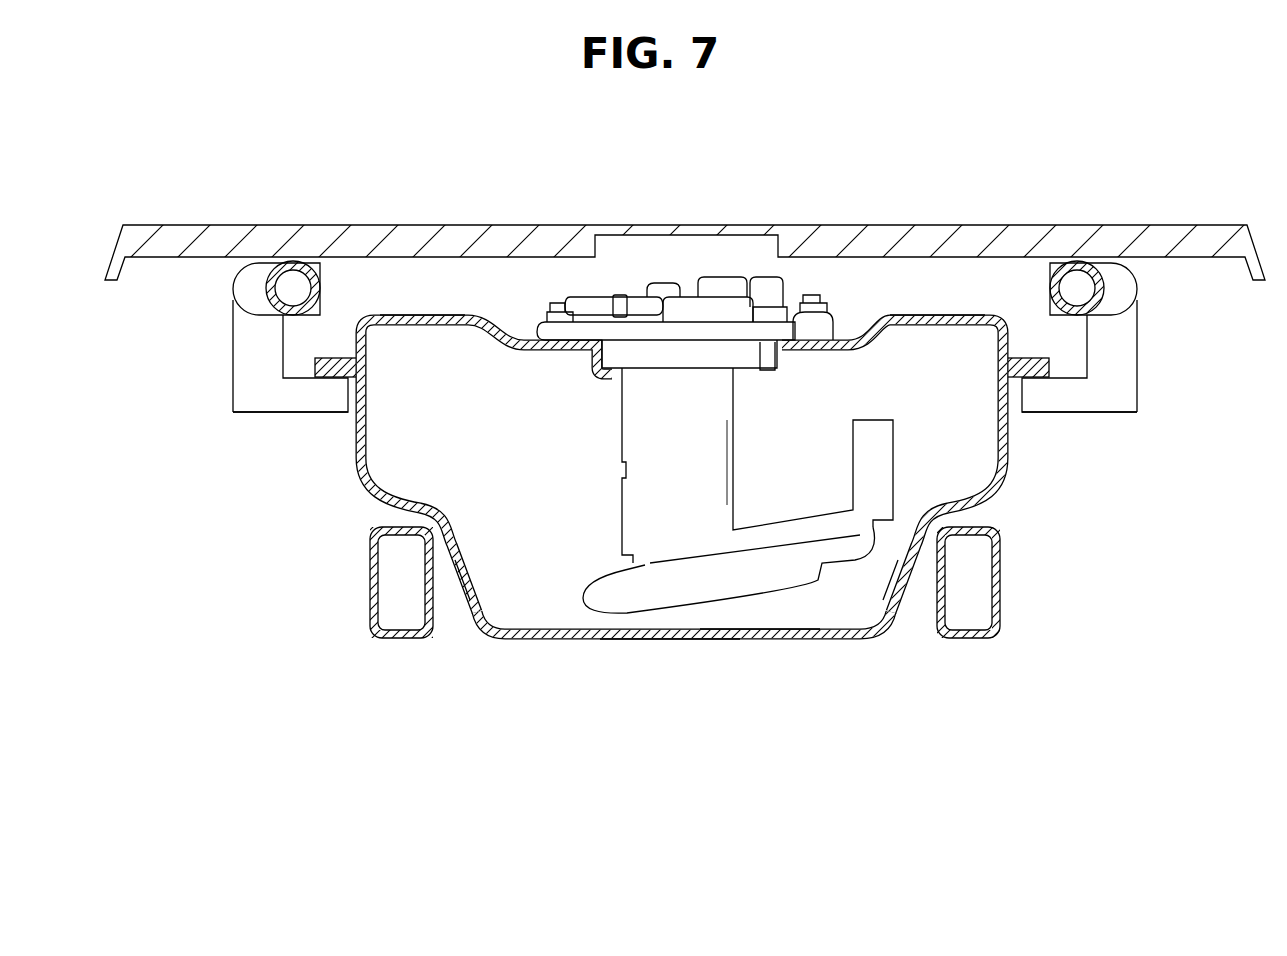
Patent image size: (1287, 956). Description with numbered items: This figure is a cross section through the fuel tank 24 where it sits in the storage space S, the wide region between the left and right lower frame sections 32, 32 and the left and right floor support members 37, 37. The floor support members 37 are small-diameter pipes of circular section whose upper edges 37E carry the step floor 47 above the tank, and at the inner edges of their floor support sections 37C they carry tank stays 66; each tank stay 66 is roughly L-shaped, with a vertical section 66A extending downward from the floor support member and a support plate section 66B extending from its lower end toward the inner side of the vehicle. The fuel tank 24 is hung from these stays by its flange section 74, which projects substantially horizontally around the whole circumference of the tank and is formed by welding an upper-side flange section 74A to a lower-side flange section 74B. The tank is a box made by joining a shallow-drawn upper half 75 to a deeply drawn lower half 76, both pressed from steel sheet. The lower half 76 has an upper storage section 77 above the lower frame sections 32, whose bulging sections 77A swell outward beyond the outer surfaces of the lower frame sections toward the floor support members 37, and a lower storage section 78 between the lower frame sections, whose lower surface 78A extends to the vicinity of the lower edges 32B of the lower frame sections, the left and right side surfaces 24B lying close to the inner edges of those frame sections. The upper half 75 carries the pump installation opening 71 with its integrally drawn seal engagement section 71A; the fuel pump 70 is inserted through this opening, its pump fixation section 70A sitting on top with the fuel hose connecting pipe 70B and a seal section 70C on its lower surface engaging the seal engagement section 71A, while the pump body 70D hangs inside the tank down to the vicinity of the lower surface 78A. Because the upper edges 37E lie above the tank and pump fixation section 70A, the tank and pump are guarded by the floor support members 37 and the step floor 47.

The fuel tank 24 is at (945, 290).
The side surfaces of the fuel tank 24B is at (443, 553).
The lower frame sections 32 is at (685, 626).
The lower edges of the lower frame sections 32B is at (408, 634).
The floor support members 37 is at (682, 239).
The floor support sections 37C is at (237, 285).
The upper edges of the floor support members 37E is at (290, 261).
The step floor 47 is at (500, 224).
The tank stay 66 is at (687, 387).
The vertical section 66A is at (233, 345).
The support plate section 66B is at (290, 413).
The fuel pump 70 is at (712, 432).
The pump fixation section 70A is at (795, 302).
The fuel hose connecting pipe 70B is at (575, 297).
The seal section 70C is at (766, 327).
The pump body 70D is at (622, 528).
The pump installation opening 71 is at (731, 352).
The seal engagement section 71A is at (783, 347).
The flange section 74 is at (711, 298).
The upper-side flange section 74A is at (1035, 355).
The lower-side flange section 74B is at (1038, 395).
The upper half 75 is at (887, 310).
The lower half 76 is at (754, 641).
The upper storage section 77 is at (692, 538).
The bulging sections 77A is at (355, 460).
The lower storage section 78 is at (840, 641).
The lower surface 78A is at (670, 641).
The storage space S is at (437, 302).